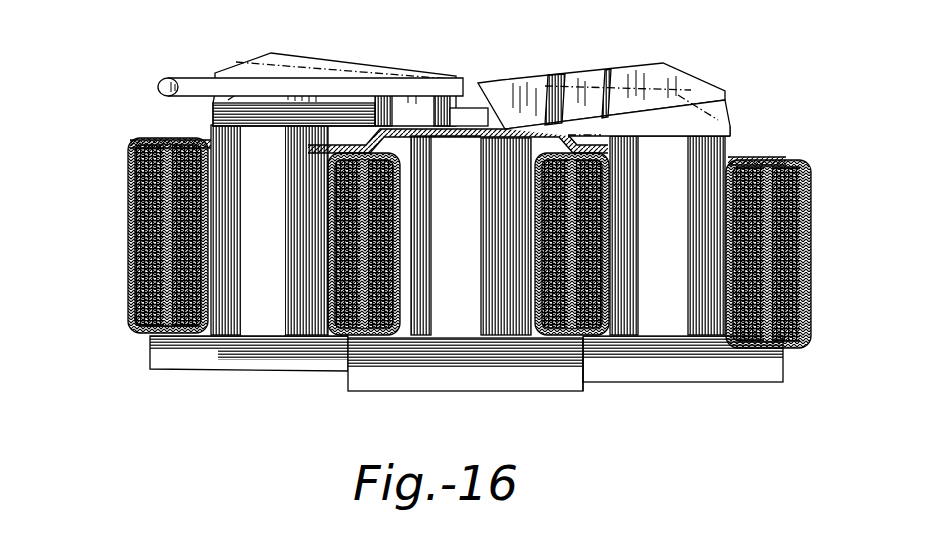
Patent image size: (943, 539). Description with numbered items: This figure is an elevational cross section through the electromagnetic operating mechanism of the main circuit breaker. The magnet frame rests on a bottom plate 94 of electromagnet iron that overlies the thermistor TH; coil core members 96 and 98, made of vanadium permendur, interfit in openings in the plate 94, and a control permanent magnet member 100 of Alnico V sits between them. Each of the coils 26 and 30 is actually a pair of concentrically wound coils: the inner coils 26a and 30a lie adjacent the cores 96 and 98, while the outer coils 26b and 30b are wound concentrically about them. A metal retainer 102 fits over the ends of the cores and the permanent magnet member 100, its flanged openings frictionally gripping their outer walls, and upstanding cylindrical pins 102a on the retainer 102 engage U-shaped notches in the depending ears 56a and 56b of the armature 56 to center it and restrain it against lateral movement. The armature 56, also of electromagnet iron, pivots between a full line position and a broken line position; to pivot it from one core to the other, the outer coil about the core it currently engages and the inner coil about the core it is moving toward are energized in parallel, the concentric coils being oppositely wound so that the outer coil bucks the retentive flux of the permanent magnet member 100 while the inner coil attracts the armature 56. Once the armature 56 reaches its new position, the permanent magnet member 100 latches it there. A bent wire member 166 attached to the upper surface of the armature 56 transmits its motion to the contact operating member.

The armature 56 is at (471, 73).
The depending ear 56a is at (398, 88).
The depending ear 56b is at (524, 85).
The bent wire member 166 is at (184, 68).
The metal retainer 102 is at (562, 124).
The cylindrical pin 102a is at (453, 103).
The coil 26 is at (802, 233).
The inner coil 26a is at (757, 150).
The outer coil 26b is at (805, 194).
The coil 30 is at (120, 252).
The inner coil 30a is at (163, 322).
The outer coil 30b is at (147, 228).
The bottom plate 94 is at (203, 342).
The coil core member 96 is at (657, 315).
The coil core member 98 is at (255, 300).
The control permanent magnet member 100 is at (390, 357).
The thermistor TH is at (469, 372).